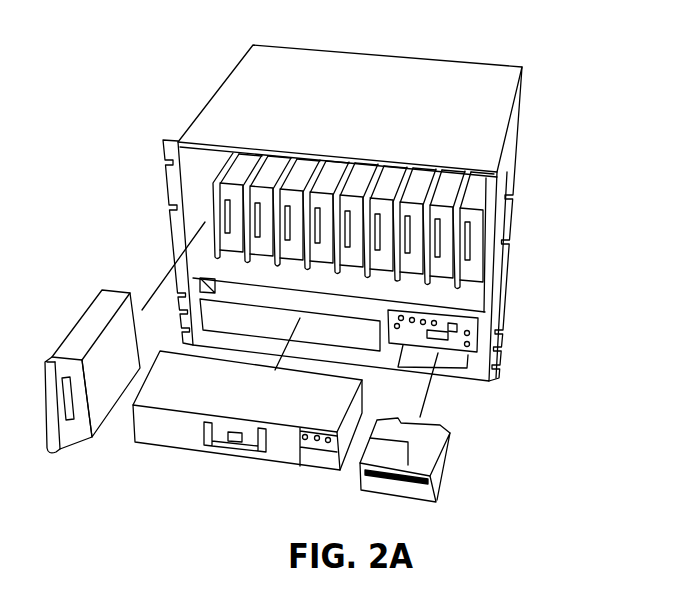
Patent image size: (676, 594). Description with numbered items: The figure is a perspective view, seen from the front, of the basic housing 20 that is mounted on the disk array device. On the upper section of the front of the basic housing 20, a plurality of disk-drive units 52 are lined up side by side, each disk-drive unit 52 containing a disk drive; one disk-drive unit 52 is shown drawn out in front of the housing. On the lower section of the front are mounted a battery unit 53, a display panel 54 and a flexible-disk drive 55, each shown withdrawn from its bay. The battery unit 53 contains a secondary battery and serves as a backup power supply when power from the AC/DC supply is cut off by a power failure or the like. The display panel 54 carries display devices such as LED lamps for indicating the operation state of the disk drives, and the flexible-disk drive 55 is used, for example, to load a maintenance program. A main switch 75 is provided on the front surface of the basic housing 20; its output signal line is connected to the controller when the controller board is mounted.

The basic housing 20 is at (475, 88).
The disk-drive unit 52 is at (473, 220).
The battery unit 53 is at (178, 440).
The display panel 54 is at (473, 327).
The flexible-disk drive 55 is at (433, 457).
The main switch 75 is at (200, 283).